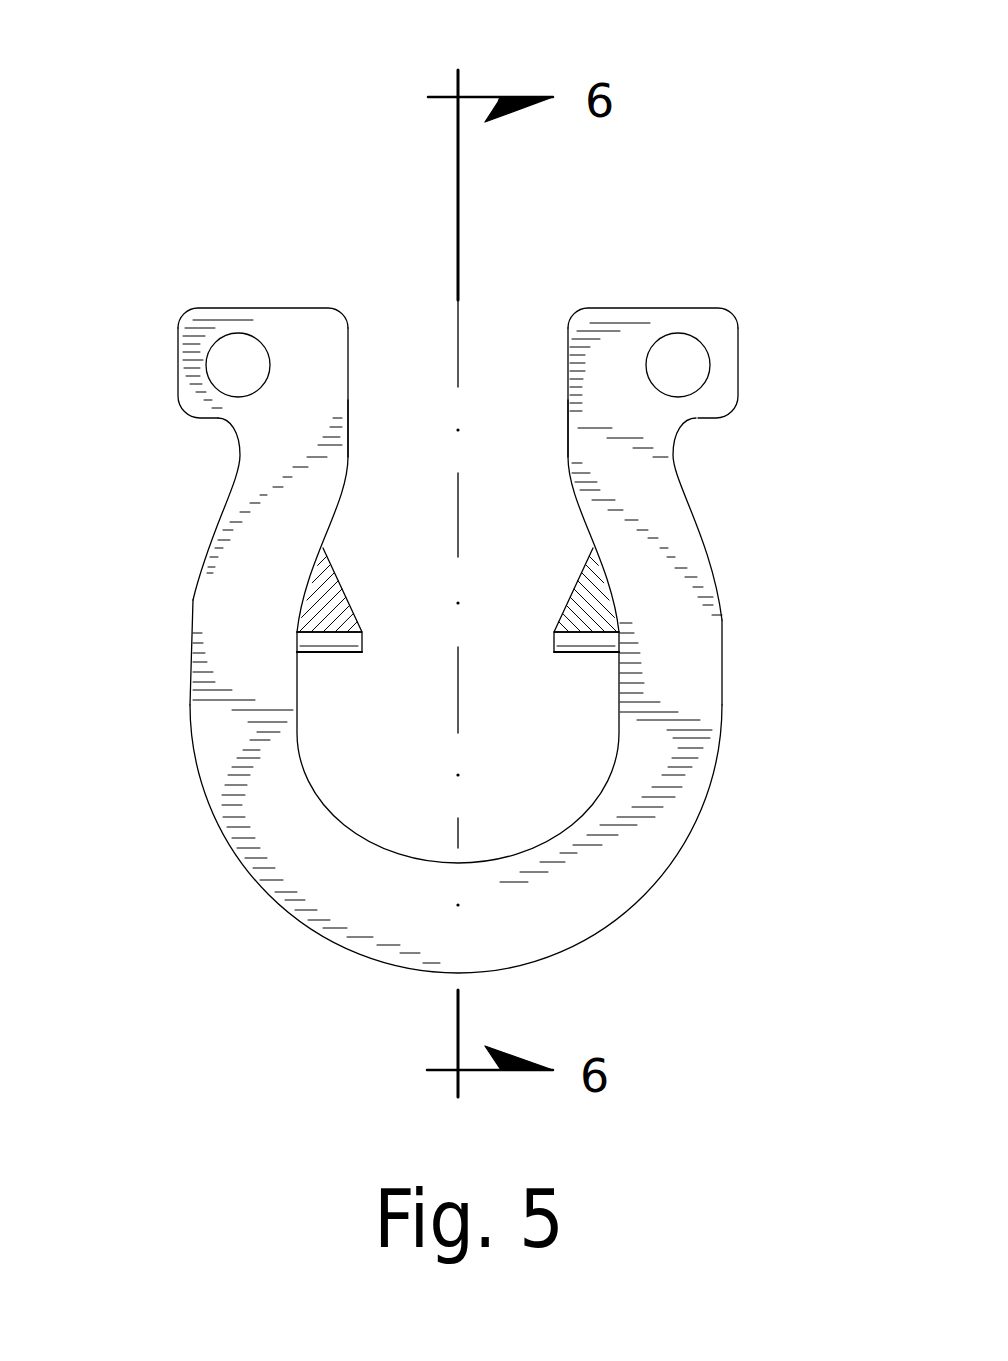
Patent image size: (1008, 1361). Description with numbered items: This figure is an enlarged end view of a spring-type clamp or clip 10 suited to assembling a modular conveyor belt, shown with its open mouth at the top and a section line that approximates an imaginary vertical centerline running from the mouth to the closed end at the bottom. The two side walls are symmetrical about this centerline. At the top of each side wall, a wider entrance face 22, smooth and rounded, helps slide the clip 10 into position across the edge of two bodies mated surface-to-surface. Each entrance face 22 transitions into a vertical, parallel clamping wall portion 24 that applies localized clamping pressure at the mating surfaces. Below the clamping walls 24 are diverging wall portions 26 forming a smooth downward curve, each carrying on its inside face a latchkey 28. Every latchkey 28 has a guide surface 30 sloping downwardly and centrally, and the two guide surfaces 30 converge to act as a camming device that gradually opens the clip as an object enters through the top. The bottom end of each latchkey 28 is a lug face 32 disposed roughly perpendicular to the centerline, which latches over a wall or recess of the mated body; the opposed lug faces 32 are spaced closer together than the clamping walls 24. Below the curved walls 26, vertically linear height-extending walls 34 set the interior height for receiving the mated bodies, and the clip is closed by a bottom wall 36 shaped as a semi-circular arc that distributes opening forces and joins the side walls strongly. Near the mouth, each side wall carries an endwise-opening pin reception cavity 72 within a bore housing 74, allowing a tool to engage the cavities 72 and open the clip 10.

The clip 10 is at (166, 99).
The entrance face 22 is at (345, 318).
The clamping wall portion 24 is at (348, 403).
The diverging wall portion 26 is at (200, 542).
The latchkey 28 is at (360, 630).
The guide surface 30 is at (337, 557).
The bottom lug face 32 is at (348, 653).
The height-extending wall 34 is at (190, 659).
The bottom wall 36 is at (598, 928).
The pin reception cavity 72 is at (225, 372).
The bore housing 74 is at (180, 318).